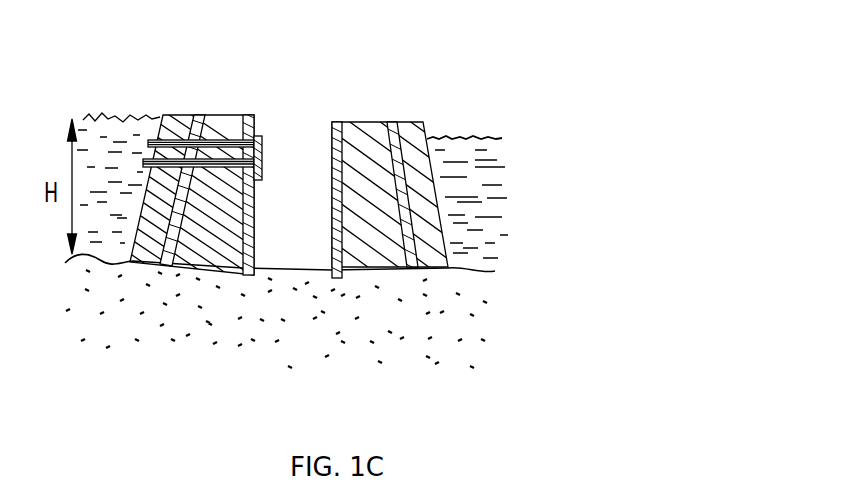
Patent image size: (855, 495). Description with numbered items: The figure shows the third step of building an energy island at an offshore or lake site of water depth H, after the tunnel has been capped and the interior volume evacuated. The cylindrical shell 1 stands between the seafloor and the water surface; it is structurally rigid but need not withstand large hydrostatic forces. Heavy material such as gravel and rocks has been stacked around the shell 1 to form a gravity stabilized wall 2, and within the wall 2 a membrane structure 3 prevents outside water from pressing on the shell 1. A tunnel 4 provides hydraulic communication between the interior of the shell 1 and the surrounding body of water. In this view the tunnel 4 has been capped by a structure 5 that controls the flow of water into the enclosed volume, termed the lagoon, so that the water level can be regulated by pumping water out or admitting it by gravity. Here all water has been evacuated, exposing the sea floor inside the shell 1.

The cylindrical shell 1 is at (338, 110).
The gravity stabilized wall 2 is at (364, 132).
The membrane structure 3 is at (203, 110).
The tunnel 4 is at (160, 128).
The structure 5 is at (262, 147).